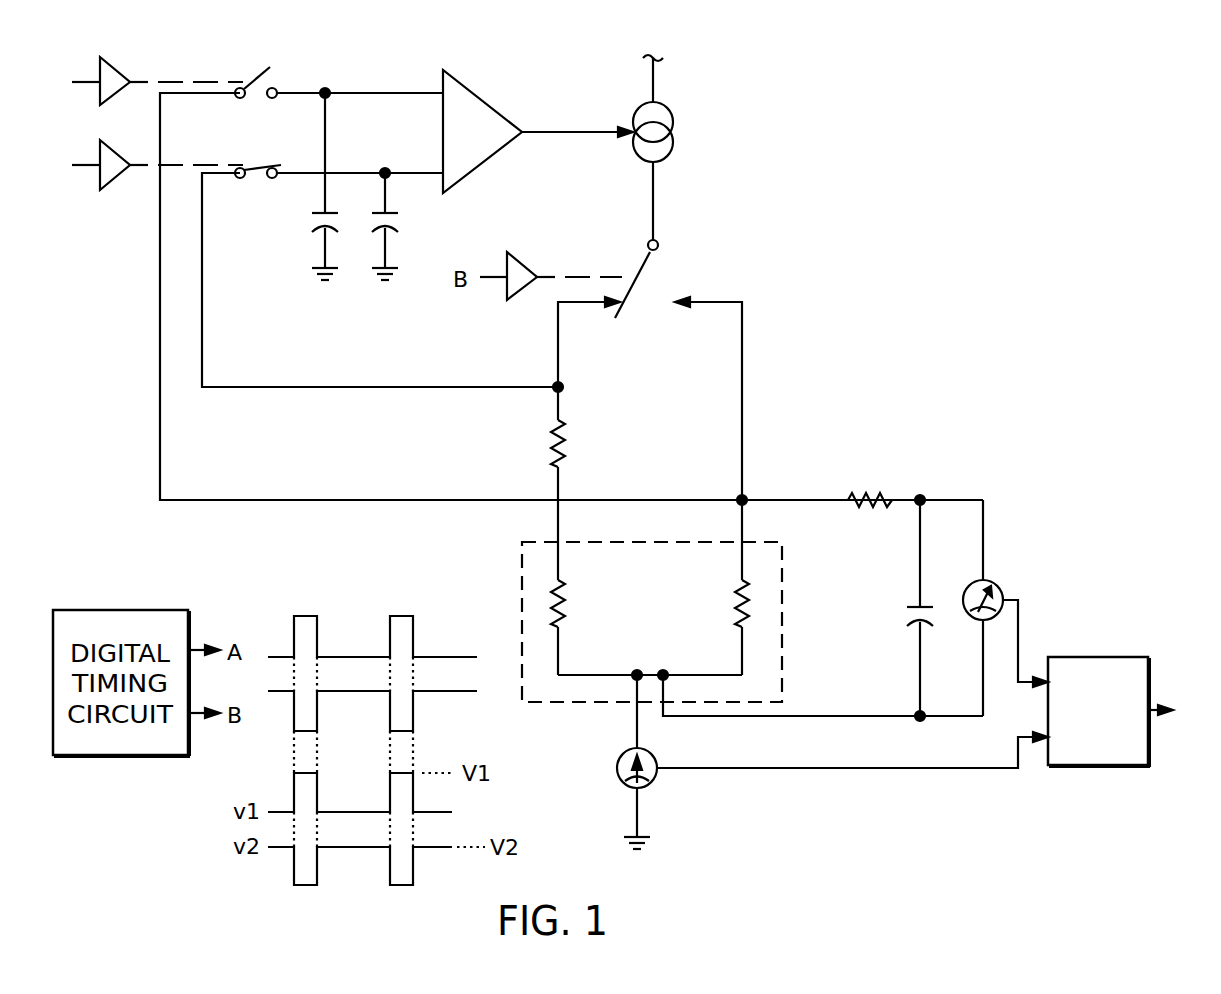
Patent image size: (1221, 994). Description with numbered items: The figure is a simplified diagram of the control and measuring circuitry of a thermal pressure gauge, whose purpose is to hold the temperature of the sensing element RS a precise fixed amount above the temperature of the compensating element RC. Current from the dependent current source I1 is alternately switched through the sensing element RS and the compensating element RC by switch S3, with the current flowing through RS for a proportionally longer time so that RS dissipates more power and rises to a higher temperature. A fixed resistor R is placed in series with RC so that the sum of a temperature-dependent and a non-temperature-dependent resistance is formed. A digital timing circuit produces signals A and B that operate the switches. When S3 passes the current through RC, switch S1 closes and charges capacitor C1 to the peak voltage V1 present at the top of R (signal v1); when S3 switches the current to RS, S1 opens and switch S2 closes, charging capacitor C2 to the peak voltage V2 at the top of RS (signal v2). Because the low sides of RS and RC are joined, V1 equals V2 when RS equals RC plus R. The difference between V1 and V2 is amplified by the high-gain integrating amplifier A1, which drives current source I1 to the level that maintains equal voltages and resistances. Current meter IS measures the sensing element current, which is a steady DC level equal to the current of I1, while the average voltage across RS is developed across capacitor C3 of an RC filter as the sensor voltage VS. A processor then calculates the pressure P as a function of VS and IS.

The timing signal A is at (144, 165).
The timing signal B is at (144, 81).
The switch S1 is at (258, 189).
The switch S2 is at (256, 100).
The switch S3 is at (656, 279).
The peak voltage V1 is at (365, 163).
The peak voltage V2 is at (344, 83).
The capacitor C1 is at (400, 226).
The capacitor C2 is at (303, 186).
The capacitor C3 is at (897, 608).
The high-gain integrating amplifier A1 is at (538, 131).
The dependent current source I1 is at (668, 130).
The signal v1 is at (576, 386).
The signal v2 is at (757, 487).
The fixed resistor Rd R is at (571, 483).
The compensating element RC is at (577, 627).
The sensing element RS is at (720, 627).
The current meter Is IS is at (832, 762).
The average sensing element voltage Vs VS is at (1005, 608).
The pressure P is at (1105, 727).